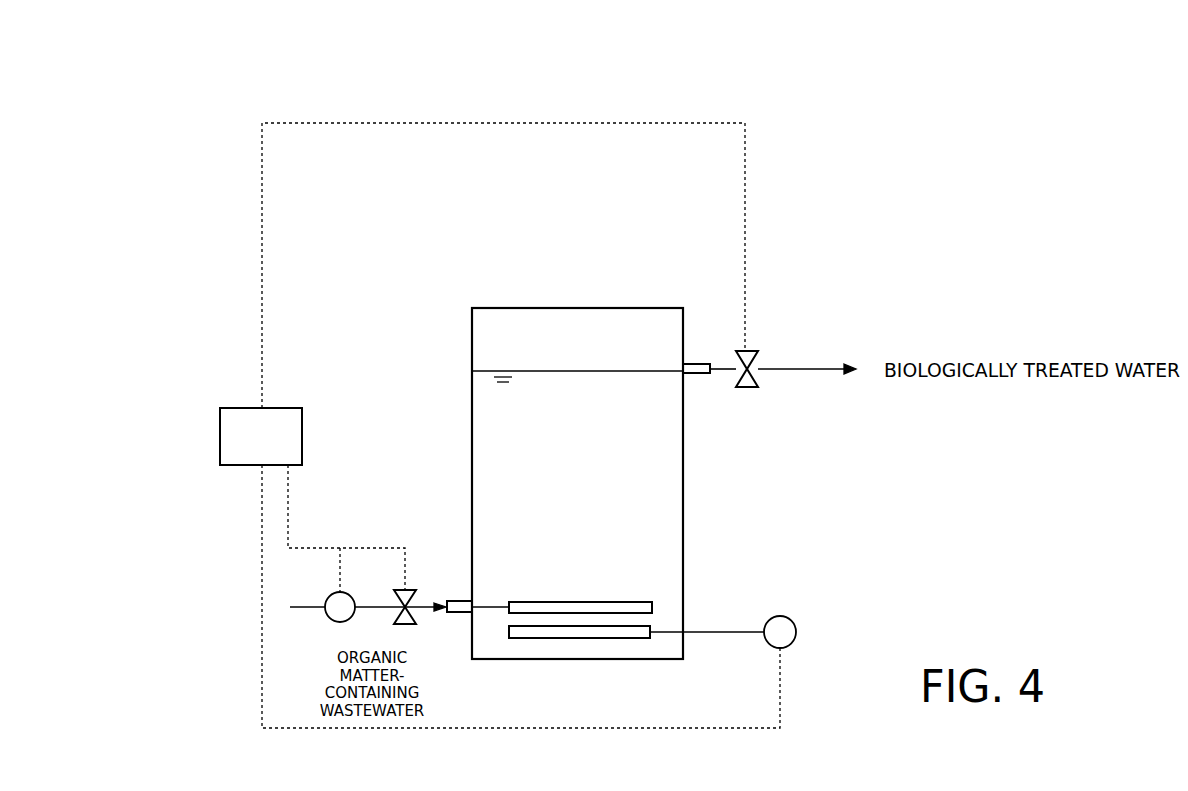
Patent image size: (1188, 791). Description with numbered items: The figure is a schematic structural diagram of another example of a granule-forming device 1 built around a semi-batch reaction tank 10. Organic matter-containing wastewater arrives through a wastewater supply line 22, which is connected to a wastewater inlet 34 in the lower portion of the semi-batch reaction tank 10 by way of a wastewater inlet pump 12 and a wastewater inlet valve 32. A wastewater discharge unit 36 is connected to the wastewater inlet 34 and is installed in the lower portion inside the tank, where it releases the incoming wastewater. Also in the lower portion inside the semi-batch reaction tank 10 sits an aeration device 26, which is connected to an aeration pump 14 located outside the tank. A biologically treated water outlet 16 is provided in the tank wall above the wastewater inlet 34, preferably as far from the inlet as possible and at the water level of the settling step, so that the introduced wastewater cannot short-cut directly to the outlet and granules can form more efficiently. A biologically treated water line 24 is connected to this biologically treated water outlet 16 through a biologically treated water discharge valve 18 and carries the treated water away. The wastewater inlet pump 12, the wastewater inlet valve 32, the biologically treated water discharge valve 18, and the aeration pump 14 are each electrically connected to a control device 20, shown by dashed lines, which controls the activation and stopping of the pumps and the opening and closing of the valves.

The granule-forming device 1 is at (650, 80).
The semi-batch reaction tank 10 is at (472, 478).
The wastewater inlet pump 12 is at (335, 623).
The aeration pump 14 is at (796, 640).
The biologically treated water outlet 16 is at (694, 362).
The biologically treated water discharge valve 18 is at (750, 386).
The control device 20 is at (220, 430).
The wastewater supply line 22 is at (295, 610).
The biologically treated water line 24 is at (800, 367).
The aeration device 26 is at (596, 640).
The wastewater inlet valve 32 is at (408, 626).
The wastewater inlet 34 is at (456, 600).
The wastewater discharge unit 36 is at (542, 601).